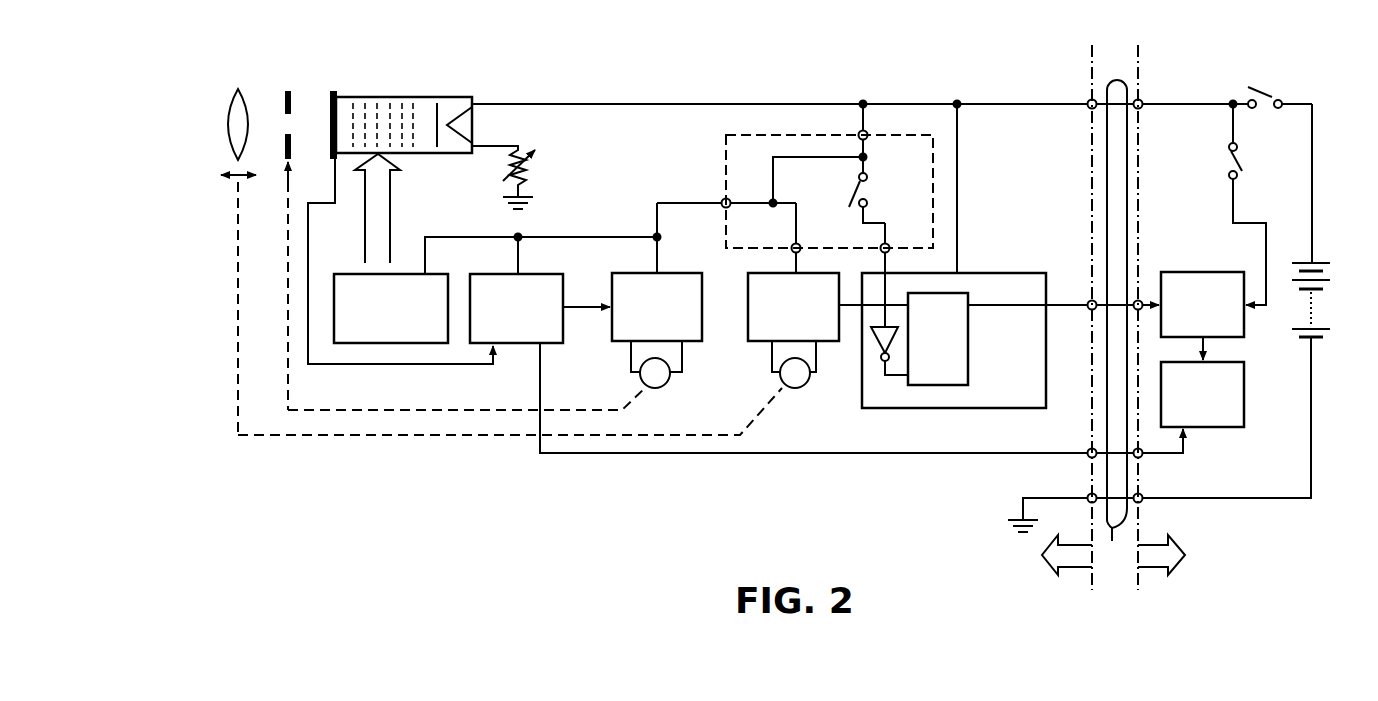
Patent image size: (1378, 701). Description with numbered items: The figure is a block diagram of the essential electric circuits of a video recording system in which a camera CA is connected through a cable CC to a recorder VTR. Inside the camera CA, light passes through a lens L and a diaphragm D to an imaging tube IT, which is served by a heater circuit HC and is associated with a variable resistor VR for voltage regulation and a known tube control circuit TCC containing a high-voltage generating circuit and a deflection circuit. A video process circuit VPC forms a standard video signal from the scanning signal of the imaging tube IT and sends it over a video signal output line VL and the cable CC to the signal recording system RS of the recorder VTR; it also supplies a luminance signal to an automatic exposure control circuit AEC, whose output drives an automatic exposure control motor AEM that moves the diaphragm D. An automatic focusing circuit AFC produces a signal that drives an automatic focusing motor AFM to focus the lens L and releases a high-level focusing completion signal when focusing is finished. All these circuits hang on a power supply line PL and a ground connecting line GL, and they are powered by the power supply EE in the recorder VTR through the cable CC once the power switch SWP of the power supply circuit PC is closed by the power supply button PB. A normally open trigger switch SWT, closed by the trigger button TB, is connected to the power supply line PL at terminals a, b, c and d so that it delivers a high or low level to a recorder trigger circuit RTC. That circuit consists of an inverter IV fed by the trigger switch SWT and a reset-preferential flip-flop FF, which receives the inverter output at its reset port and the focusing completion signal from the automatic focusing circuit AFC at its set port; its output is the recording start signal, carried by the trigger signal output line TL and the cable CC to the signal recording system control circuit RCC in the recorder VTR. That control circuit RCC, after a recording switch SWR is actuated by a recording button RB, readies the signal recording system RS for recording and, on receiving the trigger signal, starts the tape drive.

The lens L is at (240, 108).
The diaphragm D is at (292, 98).
The imaging tube IT is at (388, 97).
The heater circuit HC is at (490, 101).
The variable resistor VR is at (522, 177).
The power supply line PL is at (1008, 101).
The tube control circuit TCC is at (370, 320).
The video process circuit VPC is at (494, 320).
The automatic exposure control circuit AEC is at (635, 319).
The automatic focusing circuit AFC is at (771, 319).
The automatic exposure control motor AEM is at (663, 388).
The automatic focusing motor AFM is at (806, 386).
The trigger button TB is at (850, 187).
The trigger switch SWT is at (868, 190).
The terminal a is at (871, 140).
The terminal b is at (894, 275).
The terminal c is at (803, 239).
The terminal d is at (760, 193).
The recorder trigger circuit RTC is at (999, 269).
The R-S flip-flop FF is at (925, 348).
The inverter IV is at (879, 350).
The trigger signal output line TL is at (1063, 306).
The video signal output line VL is at (940, 452).
The ground connecting line GL is at (1055, 496).
The cable CC is at (1115, 317).
The camera CA is at (969, 568).
The recorder VTR is at (1263, 568).
The signal recording system control circuit RCC is at (1225, 317).
The signal recording system RS is at (1218, 407).
The power supply EE is at (1306, 298).
The power supply circuit PC is at (1346, 162).
The power supply button PB is at (1274, 84).
The power switch SWP is at (1282, 92).
The recording button RB is at (1247, 162).
The recording switch SWR is at (1246, 172).